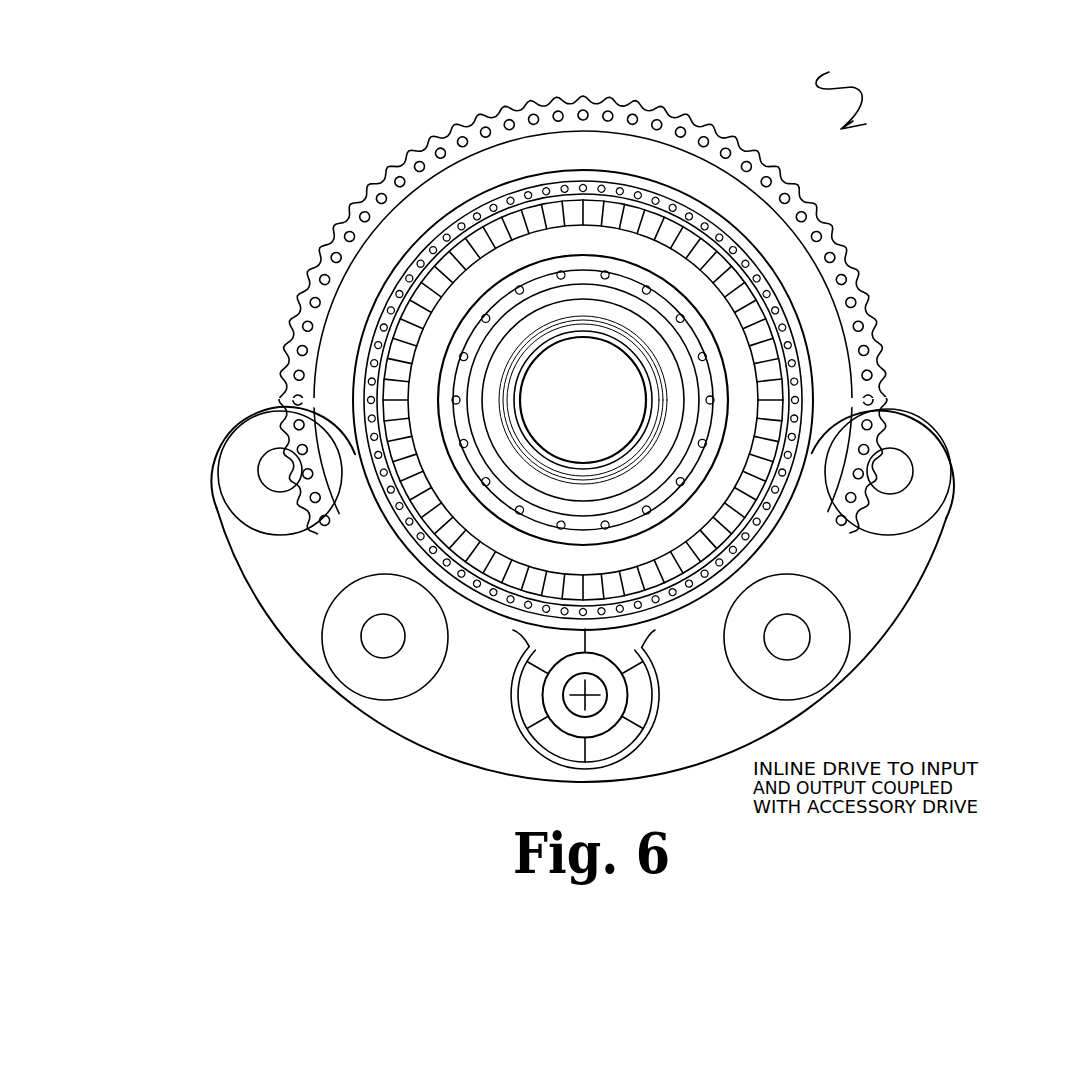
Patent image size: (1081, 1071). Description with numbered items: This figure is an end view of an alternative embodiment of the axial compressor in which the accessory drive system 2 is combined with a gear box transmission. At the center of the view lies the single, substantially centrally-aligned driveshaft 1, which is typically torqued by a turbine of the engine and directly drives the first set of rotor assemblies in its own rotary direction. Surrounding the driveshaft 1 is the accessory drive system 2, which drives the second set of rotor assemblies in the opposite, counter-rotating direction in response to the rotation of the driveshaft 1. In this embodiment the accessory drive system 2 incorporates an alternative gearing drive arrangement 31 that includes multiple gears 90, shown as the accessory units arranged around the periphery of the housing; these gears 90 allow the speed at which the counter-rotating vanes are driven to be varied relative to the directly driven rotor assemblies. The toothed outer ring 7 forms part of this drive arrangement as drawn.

The driveshaft 1 is at (592, 421).
The accessory drive system 2 is at (279, 742).
The ring gear 7 is at (880, 290).
The alternative gearing drive arrangement 31 is at (434, 738).
The gears 90 is at (350, 658).